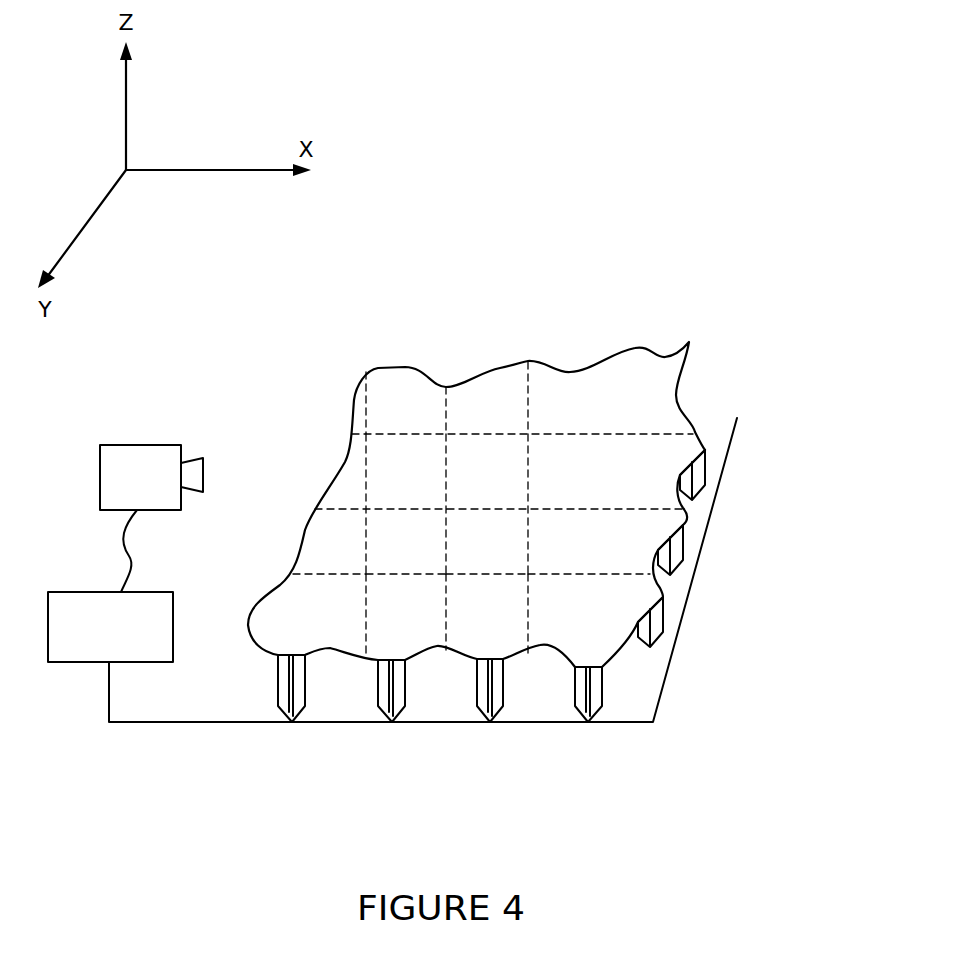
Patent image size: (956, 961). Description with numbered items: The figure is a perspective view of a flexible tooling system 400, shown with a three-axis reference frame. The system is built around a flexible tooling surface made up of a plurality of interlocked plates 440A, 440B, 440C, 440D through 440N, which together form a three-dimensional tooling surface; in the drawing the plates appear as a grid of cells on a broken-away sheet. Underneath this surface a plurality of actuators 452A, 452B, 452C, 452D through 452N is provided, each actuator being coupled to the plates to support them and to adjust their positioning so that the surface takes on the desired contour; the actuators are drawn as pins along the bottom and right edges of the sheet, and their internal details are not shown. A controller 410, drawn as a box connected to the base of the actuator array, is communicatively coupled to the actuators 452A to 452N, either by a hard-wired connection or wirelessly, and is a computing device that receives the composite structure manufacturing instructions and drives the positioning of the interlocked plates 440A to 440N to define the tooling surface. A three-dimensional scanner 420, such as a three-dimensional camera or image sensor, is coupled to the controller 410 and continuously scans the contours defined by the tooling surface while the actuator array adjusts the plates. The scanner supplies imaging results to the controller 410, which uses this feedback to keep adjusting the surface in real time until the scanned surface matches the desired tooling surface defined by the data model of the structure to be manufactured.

The flexible tooling system 400 is at (678, 248).
The controller 410 is at (87, 644).
The 3-D scanner 420 is at (118, 493).
The interlocked plate 440A is at (290, 624).
The interlocked plate 440B is at (373, 624).
The interlocked plate 440C is at (457, 624).
The interlocked plate 440D is at (557, 624).
The interlocked plate 440N is at (633, 405).
The actuator 452A is at (283, 723).
The actuator 452B is at (385, 723).
The actuator 452C is at (482, 723).
The actuator 452D is at (592, 723).
The actuator 452N is at (705, 473).